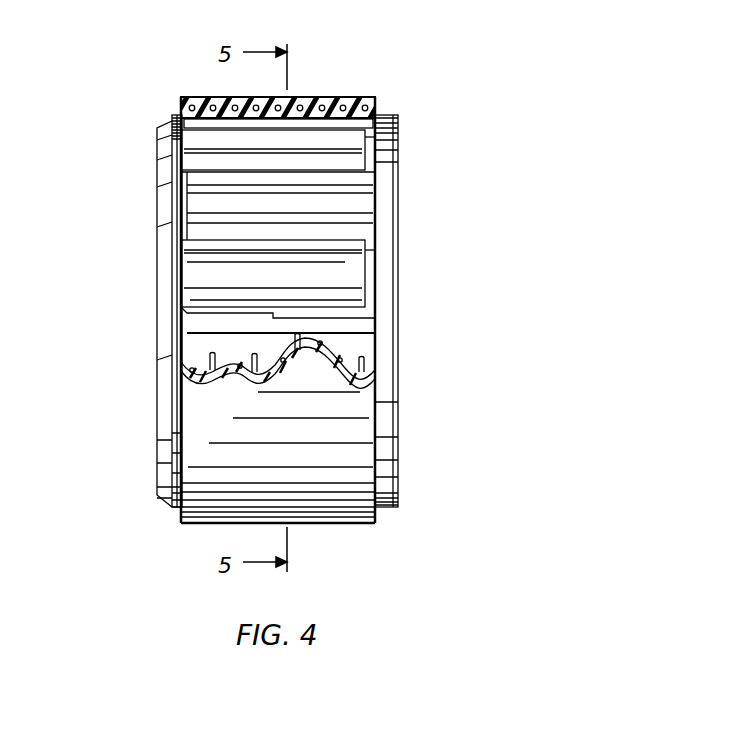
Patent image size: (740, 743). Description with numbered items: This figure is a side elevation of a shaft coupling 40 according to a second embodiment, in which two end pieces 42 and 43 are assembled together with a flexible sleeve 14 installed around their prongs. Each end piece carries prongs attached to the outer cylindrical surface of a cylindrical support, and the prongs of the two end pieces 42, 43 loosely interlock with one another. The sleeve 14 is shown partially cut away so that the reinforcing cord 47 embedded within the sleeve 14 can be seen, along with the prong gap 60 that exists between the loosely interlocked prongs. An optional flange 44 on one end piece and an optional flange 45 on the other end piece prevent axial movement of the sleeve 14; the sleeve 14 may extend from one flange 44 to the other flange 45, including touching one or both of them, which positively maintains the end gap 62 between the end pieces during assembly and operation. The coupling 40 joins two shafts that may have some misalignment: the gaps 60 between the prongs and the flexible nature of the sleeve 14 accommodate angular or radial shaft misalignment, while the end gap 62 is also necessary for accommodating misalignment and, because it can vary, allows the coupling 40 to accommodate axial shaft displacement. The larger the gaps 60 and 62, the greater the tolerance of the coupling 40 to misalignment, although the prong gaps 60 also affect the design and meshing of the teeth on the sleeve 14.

The coupling 40 is at (492, 78).
The end piece 42 is at (399, 159).
The end piece 43 is at (157, 170).
The flange 44 is at (380, 114).
The flange 45 is at (172, 120).
The reinforcing cord 47 is at (298, 104).
The prong gap 60 is at (337, 307).
The end gap 62 is at (182, 232).
The flexible sleeve 14 is at (356, 525).